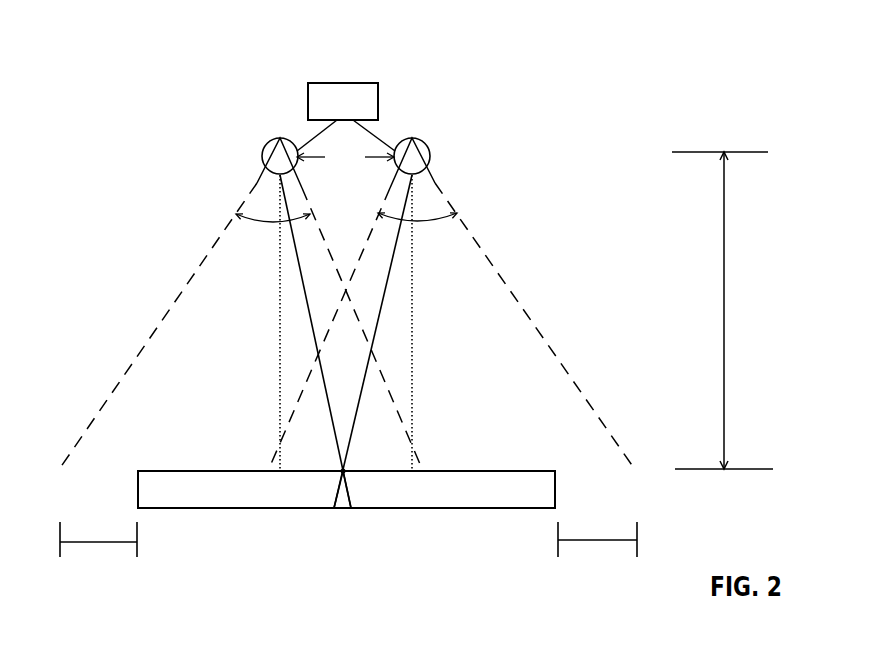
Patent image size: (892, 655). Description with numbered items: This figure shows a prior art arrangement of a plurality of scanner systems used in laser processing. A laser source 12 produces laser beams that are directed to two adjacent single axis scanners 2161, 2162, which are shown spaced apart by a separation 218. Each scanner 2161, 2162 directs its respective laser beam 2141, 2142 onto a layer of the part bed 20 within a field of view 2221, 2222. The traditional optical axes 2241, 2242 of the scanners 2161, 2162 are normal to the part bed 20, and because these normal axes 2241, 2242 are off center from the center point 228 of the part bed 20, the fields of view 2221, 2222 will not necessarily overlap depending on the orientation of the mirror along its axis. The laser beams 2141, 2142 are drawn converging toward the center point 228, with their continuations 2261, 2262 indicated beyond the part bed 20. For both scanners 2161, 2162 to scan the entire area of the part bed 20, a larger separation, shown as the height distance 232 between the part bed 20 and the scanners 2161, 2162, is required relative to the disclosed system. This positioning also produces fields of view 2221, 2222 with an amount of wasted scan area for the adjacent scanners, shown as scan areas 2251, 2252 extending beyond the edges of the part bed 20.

The laser source 12 is at (379, 82).
The scanner 2161 is at (252, 147).
The scanner 2162 is at (442, 152).
The emitter spacing 218 is at (345, 158).
The field of view 2221 is at (268, 220).
The field of view 2222 is at (418, 218).
The optical axis 2241 is at (266, 307).
The optical axis 2242 is at (416, 275).
The laser beam 2141 is at (312, 381).
The laser beam 2142 is at (388, 335).
The center point 228 is at (343, 471).
The part bed 20 is at (420, 490).
The first beam exit 2261 is at (334, 508).
The second beam exit 2262 is at (352, 508).
The scan area 2251 is at (96, 543).
The scan area 2252 is at (603, 540).
The height distance 232 is at (745, 310).